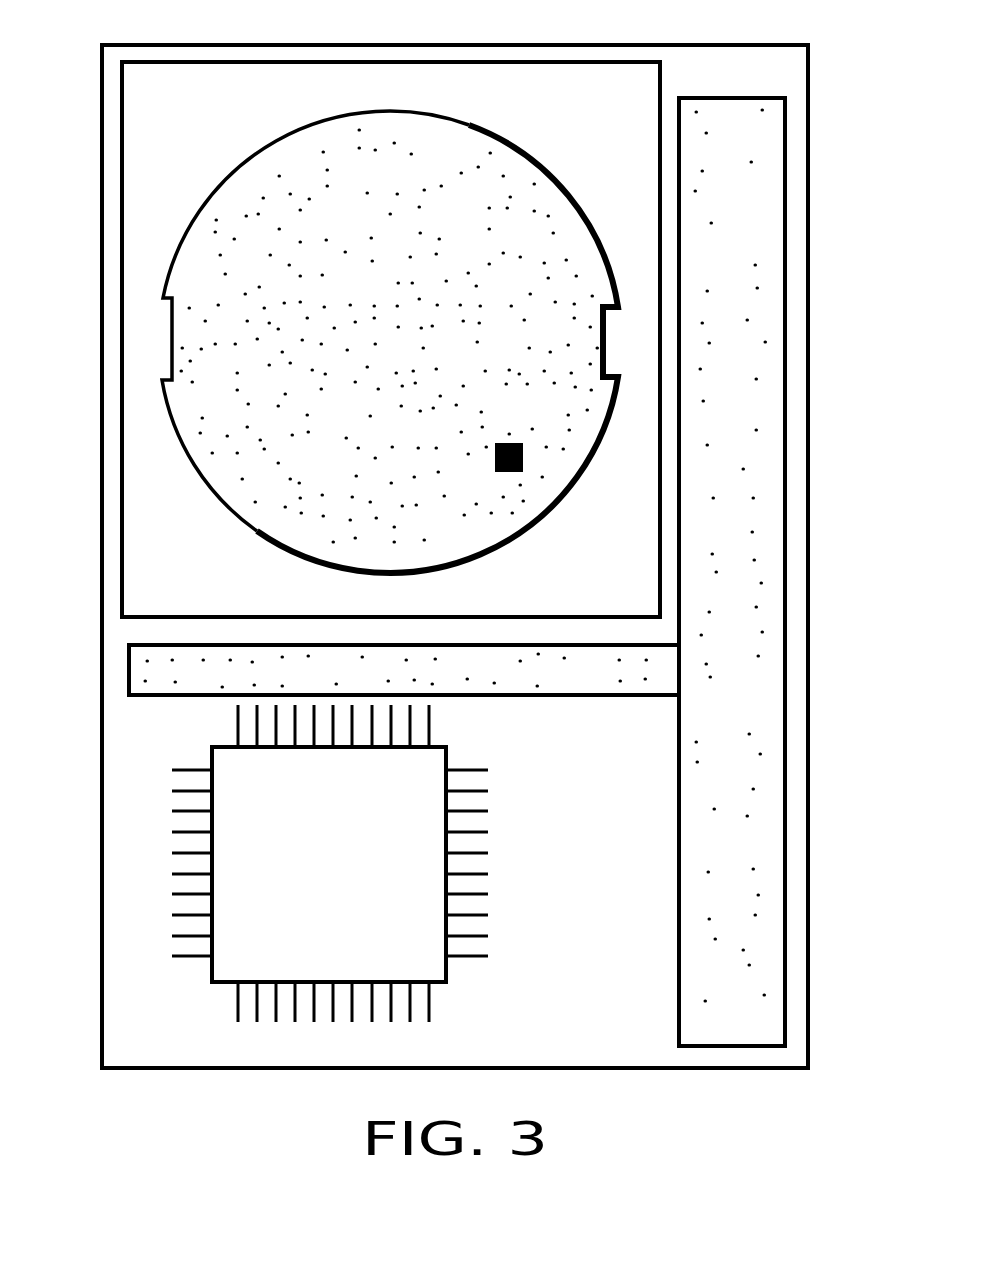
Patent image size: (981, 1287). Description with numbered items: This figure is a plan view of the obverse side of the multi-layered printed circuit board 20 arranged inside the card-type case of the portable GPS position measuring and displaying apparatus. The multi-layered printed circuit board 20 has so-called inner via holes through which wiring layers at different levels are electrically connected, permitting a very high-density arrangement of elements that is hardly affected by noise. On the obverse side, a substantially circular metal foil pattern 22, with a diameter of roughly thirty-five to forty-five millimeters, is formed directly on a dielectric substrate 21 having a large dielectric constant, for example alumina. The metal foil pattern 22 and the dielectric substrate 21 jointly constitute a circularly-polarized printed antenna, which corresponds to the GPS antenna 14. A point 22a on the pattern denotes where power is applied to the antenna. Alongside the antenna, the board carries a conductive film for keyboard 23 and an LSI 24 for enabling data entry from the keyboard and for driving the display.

The GPS antenna 14 is at (70, 227).
The multi-layered printed circuit board 20 is at (810, 468).
The dielectric substrate 21 is at (143, 282).
The metal foil pattern 22 is at (204, 440).
The power application point 22a is at (496, 467).
The conductive film for keyboard 23 is at (688, 748).
The LSI 24 is at (120, 814).